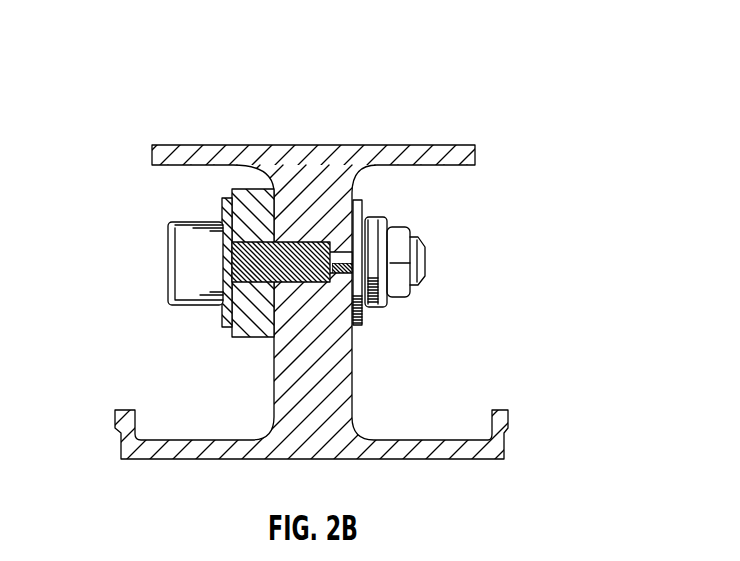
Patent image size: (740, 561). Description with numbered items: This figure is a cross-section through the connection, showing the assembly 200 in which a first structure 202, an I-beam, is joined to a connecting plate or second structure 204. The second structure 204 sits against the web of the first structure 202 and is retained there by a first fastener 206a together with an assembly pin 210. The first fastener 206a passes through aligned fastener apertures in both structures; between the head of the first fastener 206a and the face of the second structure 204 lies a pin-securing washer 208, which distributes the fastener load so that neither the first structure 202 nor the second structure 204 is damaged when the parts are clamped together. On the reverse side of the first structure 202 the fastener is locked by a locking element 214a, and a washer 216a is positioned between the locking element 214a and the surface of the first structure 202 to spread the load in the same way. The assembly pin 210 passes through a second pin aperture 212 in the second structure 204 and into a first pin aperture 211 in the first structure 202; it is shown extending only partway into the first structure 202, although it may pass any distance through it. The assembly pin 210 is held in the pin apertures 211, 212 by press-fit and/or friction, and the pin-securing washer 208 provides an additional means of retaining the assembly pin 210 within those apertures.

The assembly 200 is at (552, 58).
The first structure 202 is at (434, 157).
The second structure 204 is at (252, 338).
The first fastener 206a is at (172, 273).
The pin-securing washer 208 is at (223, 210).
The assembly pin 210 is at (255, 274).
The first pin aperture 211 is at (310, 284).
The second pin aperture 212 is at (250, 240).
The locking element 214a is at (418, 287).
The washer 216a is at (359, 212).